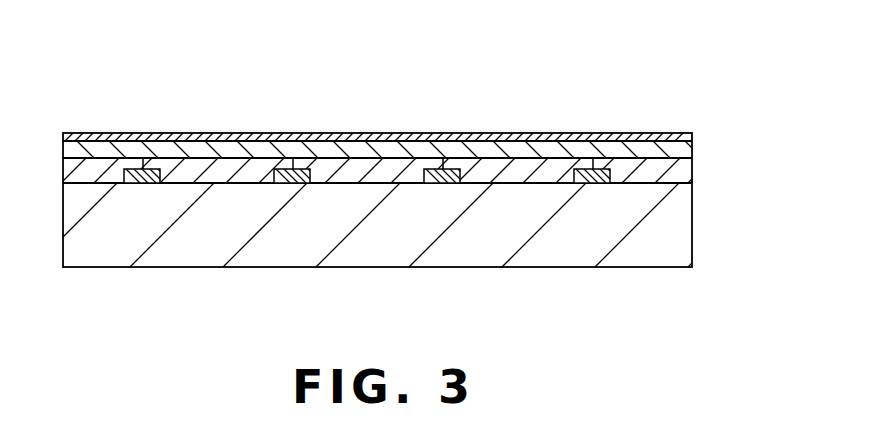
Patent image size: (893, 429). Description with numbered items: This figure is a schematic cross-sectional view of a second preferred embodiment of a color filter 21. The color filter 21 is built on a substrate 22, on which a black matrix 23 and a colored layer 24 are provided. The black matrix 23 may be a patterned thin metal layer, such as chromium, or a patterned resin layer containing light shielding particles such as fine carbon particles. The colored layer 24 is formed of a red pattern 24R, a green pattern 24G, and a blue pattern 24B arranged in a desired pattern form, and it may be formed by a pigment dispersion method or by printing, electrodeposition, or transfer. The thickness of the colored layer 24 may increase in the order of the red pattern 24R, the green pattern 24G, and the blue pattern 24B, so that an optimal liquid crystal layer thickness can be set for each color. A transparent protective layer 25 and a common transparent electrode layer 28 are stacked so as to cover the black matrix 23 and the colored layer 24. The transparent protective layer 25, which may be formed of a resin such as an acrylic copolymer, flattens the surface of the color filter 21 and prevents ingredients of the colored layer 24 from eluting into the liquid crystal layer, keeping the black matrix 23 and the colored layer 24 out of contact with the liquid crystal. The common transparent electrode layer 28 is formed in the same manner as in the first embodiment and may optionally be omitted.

The color filter 21 is at (578, 87).
The substrate 22 is at (678, 237).
The black matrix 23 is at (150, 182).
The colored layer 24 is at (693, 170).
The blue pattern 24B is at (105, 167).
The red pattern 24R is at (227, 167).
The green pattern 24G is at (363, 168).
The transparent protective layer 25 is at (683, 148).
The common transparent electrode layer 28 is at (423, 140).